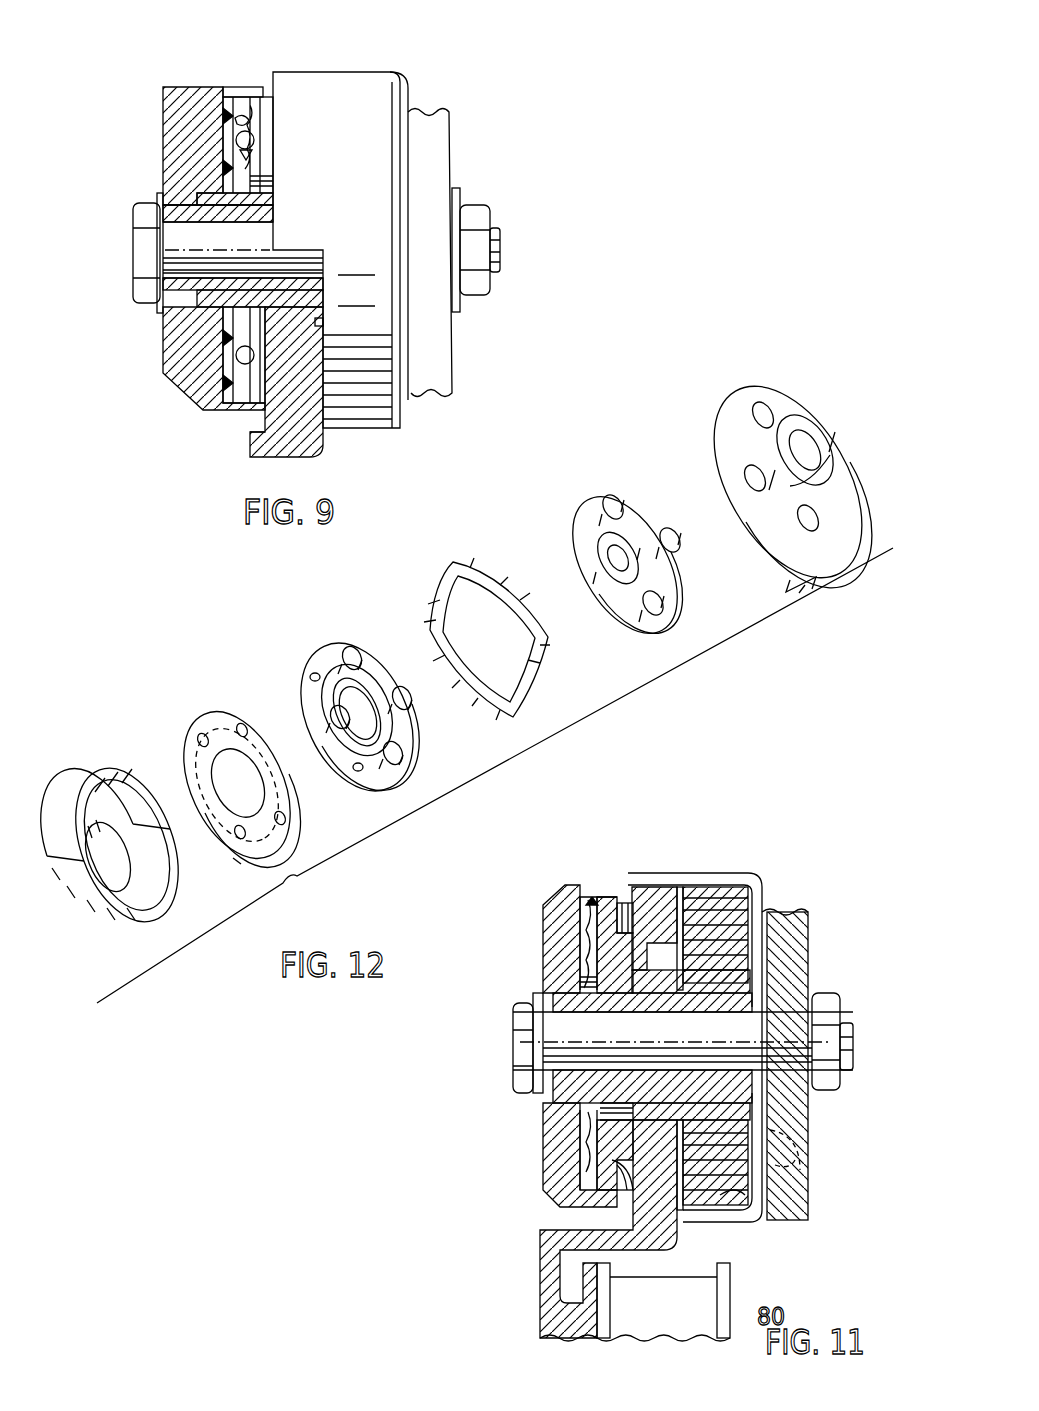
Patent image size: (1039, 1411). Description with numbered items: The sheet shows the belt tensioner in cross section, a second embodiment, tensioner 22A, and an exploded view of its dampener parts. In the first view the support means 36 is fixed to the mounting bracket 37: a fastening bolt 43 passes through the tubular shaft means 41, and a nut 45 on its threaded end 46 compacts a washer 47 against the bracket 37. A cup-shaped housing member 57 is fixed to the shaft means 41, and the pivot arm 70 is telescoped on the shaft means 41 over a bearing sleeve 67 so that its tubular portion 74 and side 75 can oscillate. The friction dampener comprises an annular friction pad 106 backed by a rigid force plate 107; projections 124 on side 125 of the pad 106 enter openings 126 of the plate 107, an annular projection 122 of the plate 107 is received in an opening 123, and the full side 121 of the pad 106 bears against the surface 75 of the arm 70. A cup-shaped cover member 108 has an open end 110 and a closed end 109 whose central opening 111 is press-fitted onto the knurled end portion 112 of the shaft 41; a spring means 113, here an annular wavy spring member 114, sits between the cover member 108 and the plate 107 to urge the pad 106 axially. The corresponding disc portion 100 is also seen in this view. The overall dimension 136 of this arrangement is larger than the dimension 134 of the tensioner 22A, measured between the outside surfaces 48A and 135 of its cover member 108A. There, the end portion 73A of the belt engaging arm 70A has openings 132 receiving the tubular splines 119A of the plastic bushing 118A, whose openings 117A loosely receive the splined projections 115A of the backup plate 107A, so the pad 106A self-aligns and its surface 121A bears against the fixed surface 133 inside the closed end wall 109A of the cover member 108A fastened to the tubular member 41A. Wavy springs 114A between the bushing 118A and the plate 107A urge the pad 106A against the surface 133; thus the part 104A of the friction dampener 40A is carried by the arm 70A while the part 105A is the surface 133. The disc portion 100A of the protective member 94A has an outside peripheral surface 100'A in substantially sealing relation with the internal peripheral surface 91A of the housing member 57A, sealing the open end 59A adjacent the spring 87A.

In FIG. 9, the dimension 136 is at (403, 70).
In FIG. 9, the open end 110 is at (262, 96).
In FIG. 9, the projections 124 is at (252, 98).
In FIG. 9, the housing member 57 is at (343, 72).
In FIG. 9, the support means 36 is at (408, 95).
In FIG. 9, the wavy spring member 114 is at (230, 128).
In FIG. 9, the cover member 108 is at (182, 108).
In FIG. 9, the annular projection 122 is at (240, 140).
In FIG. 9, the openings 126 is at (258, 124).
In FIG. 9, the bearing sleeve 67 is at (178, 213).
In FIG. 9, the opening 123 is at (248, 146).
In FIG. 9, the side 125 is at (258, 183).
In FIG. 9, the mounting bracket 37 is at (452, 153).
In FIG. 9, the washer 47 is at (462, 198).
In FIG. 9, the nut 45 is at (482, 212).
In FIG. 9, the threaded end 46 is at (501, 243).
In FIG. 9, the shaft means 41 is at (170, 223).
In FIG. 9, the fastening bolt 43 is at (173, 240).
In FIG. 9, the opening 111 is at (172, 267).
In FIG. 9, the knurled end portion 112 is at (160, 284).
In FIG. 9, the tubular portion 74 is at (212, 300).
In FIG. 9, the side 75 is at (292, 312).
In FIG. 9, the side 121 is at (324, 323).
In FIG. 9, the force plate 107 is at (225, 328).
In FIG. 9, the closed end 109 is at (172, 355).
In FIG. 9, the spring means 113 is at (224, 383).
In FIG. 9, the annular pad 106 is at (248, 420).
In FIG. 9, the disc portion 100 is at (357, 397).
In FIG. 9, the pivot arm 70 is at (270, 447).
In FIG. 12, the end portion 73A is at (755, 388).
In FIG. 11, the end portion 73A is at (652, 898).
In FIG. 12, the openings 132 is at (773, 418).
In FIG. 11, the openings 132 is at (680, 905).
In FIG. 12, the tubular splines 119A is at (614, 498).
In FIG. 11, the tubular splines 119A is at (643, 983).
In FIG. 12, the openings 117A is at (624, 500).
In FIG. 11, the openings 117A is at (690, 955).
In FIG. 12, the plastic bushing 118A is at (582, 518).
In FIG. 11, the plastic bushing 118A is at (626, 1215).
In FIG. 12, the wavy springs 114A is at (435, 576).
In FIG. 11, the wavy springs 114A is at (628, 1182).
In FIG. 12, the backup plate 107A is at (332, 656).
In FIG. 11, the backup plate 107A is at (607, 1178).
In FIG. 12, the splined projections 115A is at (395, 752).
In FIG. 11, the splined projections 115A is at (745, 905).
In FIG. 12, the annular pad 106A is at (200, 715).
In FIG. 11, the annular pad 106A is at (580, 937).
In FIG. 12, the closed end wall 109A is at (80, 778).
In FIG. 11, the closed end wall 109A is at (580, 965).
In FIG. 12, the fixed surface 133 is at (90, 790).
In FIG. 11, the fixed surface 133 is at (590, 1145).
In FIG. 12, the surface 121A is at (236, 848).
In FIG. 11, the surface 121A is at (592, 1168).
In FIG. 12, the cover member 108A is at (95, 945).
In FIG. 11, the cover member 108A is at (545, 1118).
In FIG. 11, the tensioner 22A is at (812, 842).
In FIG. 11, the dimension 134 is at (763, 910).
In FIG. 11, the part 104A is at (622, 905).
In FIG. 11, the part 105A is at (592, 897).
In FIG. 11, the friction dampener 40A is at (566, 884).
In FIG. 11, the outside surface 135 is at (543, 915).
In FIG. 11, the outside surface 48A is at (770, 926).
In FIG. 11, the housing member 57A is at (765, 976).
In FIG. 11, the tubular member 41A is at (560, 1018).
In FIG. 11, the protective member 94A is at (735, 1124).
In FIG. 11, the spring 87A is at (747, 1160).
In FIG. 11, the internal peripheral surface 91A is at (745, 1201).
In FIG. 11, the disc portion 100A is at (688, 1220).
In FIG. 11, the outside peripheral surface 100'A is at (743, 1253).
In FIG. 11, the open end 59A is at (690, 1265).
In FIG. 11, the belt engaging arm 70A is at (543, 1288).